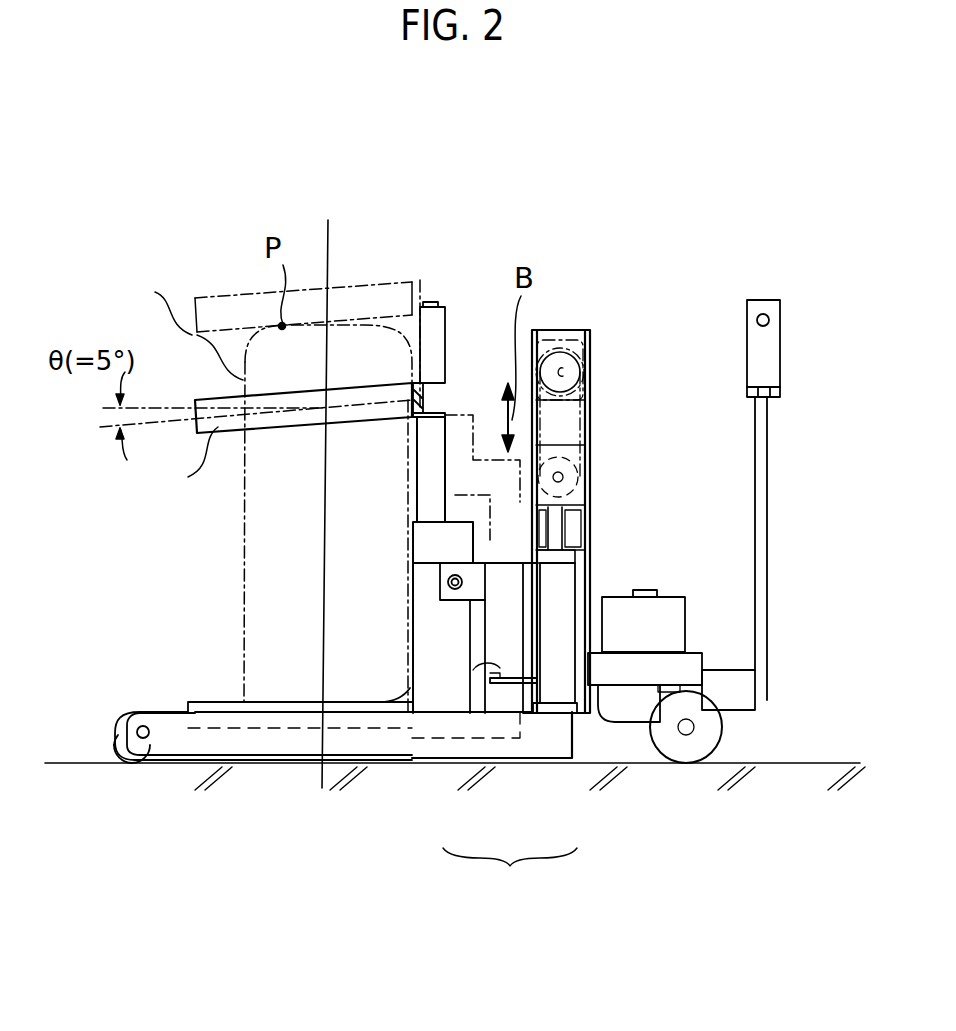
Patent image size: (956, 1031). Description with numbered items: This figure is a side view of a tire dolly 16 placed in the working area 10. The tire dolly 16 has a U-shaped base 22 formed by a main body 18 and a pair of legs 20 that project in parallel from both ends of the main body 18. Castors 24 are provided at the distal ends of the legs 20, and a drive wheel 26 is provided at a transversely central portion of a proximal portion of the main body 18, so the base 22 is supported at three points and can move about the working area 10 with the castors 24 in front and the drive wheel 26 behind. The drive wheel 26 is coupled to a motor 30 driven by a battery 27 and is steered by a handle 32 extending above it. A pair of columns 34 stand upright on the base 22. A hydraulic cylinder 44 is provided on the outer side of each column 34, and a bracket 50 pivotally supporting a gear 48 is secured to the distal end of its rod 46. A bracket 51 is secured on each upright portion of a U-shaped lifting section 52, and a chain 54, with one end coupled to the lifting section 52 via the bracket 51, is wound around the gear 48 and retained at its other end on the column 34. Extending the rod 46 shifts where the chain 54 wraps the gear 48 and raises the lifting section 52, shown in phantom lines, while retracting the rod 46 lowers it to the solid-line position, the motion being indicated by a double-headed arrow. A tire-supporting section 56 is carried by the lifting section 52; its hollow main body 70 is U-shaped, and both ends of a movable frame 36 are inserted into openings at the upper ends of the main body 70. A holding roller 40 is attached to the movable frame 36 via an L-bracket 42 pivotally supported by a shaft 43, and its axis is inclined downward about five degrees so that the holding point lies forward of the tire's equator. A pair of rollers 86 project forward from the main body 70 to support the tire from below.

The working area 10 is at (787, 763).
The tire dolly 16 is at (615, 305).
The main body 18 is at (550, 750).
The legs 20 is at (468, 750).
The U-shaped base 22 is at (510, 874).
The castors 24 is at (120, 763).
The drive wheel 26 is at (688, 757).
The battery 27 is at (675, 620).
The motor 30 is at (633, 717).
The handle 32 is at (760, 300).
The columns 34 is at (573, 423).
The movable frame 36 is at (425, 483).
The holding roller 40 is at (215, 430).
The L-bracket 42 is at (423, 386).
The shaft 43 is at (427, 403).
The hydraulic cylinder 44 is at (588, 598).
The rod 46 is at (563, 520).
The gear 48 is at (577, 480).
The bracket 50 is at (575, 440).
The bracket 51 is at (480, 668).
The lifting section 52 is at (473, 670).
The chain 54 is at (585, 555).
The tire-supporting section 56 is at (413, 553).
The hollow main body 70 is at (425, 587).
The rollers 86 is at (217, 700).